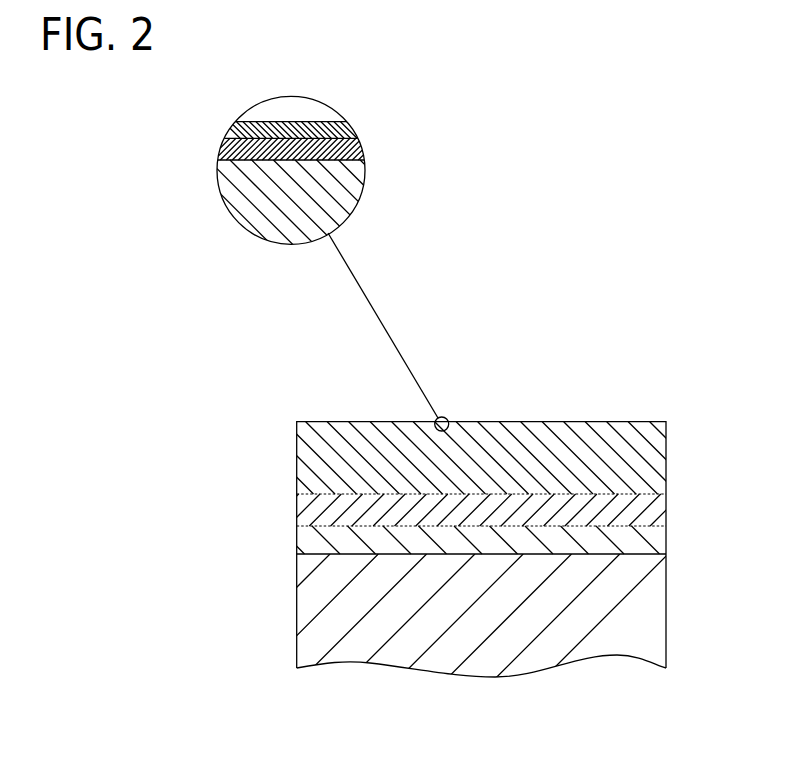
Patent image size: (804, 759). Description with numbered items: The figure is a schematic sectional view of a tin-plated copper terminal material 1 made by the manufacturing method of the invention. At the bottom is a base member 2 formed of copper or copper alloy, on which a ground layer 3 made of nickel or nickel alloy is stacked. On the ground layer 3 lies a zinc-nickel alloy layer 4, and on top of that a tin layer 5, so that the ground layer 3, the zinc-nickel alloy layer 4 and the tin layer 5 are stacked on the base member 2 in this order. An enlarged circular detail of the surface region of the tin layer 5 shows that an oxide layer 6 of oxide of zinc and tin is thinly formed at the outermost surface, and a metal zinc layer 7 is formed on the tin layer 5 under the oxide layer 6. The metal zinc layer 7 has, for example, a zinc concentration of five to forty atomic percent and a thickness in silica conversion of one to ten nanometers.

The tin-plated copper terminal material 1 is at (628, 396).
The base member 2 is at (317, 620).
The ground layer 3 is at (313, 533).
The zinc-nickel alloy layer 4 is at (308, 508).
The tin layer 5 is at (303, 443).
The oxide layer 6 is at (352, 129).
The metal zinc layer 7 is at (355, 152).